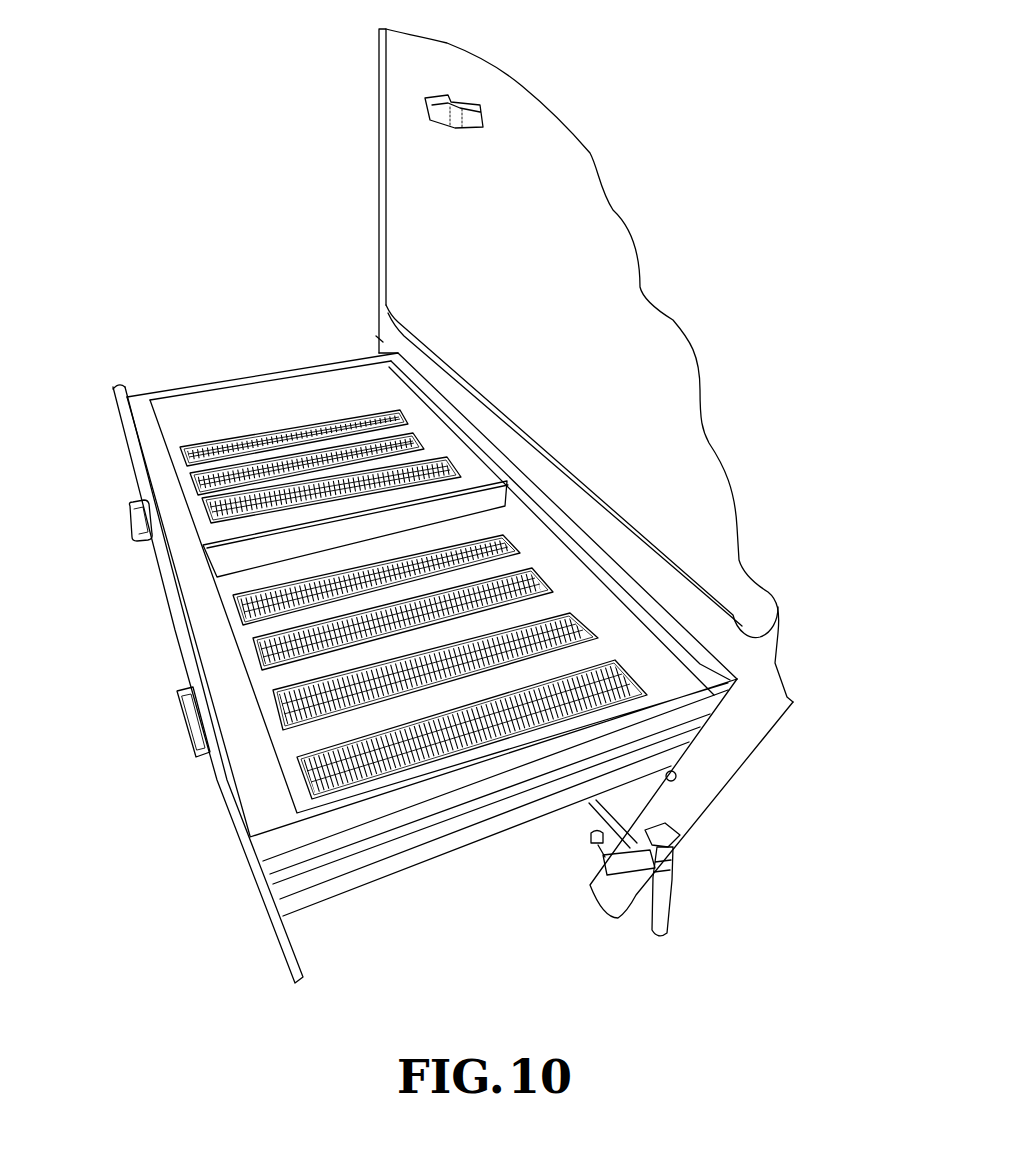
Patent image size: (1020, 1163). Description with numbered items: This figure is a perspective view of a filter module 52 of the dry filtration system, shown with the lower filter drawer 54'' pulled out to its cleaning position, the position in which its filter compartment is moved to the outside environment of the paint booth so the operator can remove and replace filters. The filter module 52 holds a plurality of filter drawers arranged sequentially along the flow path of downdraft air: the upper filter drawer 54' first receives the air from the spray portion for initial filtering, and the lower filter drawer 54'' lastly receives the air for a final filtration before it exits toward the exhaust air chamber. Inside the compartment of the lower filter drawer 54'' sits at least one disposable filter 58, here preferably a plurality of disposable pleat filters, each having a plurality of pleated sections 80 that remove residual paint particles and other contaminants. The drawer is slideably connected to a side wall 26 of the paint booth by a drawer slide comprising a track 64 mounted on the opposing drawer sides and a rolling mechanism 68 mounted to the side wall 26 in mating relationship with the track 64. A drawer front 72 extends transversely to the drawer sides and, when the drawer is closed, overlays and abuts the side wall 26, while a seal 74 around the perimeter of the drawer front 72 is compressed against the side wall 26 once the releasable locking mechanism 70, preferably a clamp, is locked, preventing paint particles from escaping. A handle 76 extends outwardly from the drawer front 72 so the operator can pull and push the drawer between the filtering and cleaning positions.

The side wall 26 is at (743, 727).
The filter module 52 is at (372, 337).
The upper filter drawer 54' is at (538, 365).
The lower filter drawer 54'' is at (484, 889).
The disposable filter 58 is at (610, 655).
The track 64 is at (443, 838).
The rolling mechanism 68 is at (677, 773).
The releasable locking mechanism 70 is at (660, 940).
The drawer front 72 is at (172, 619).
The seal 74 is at (113, 388).
The handle 76 is at (128, 518).
The pleated sections 80 is at (537, 645).